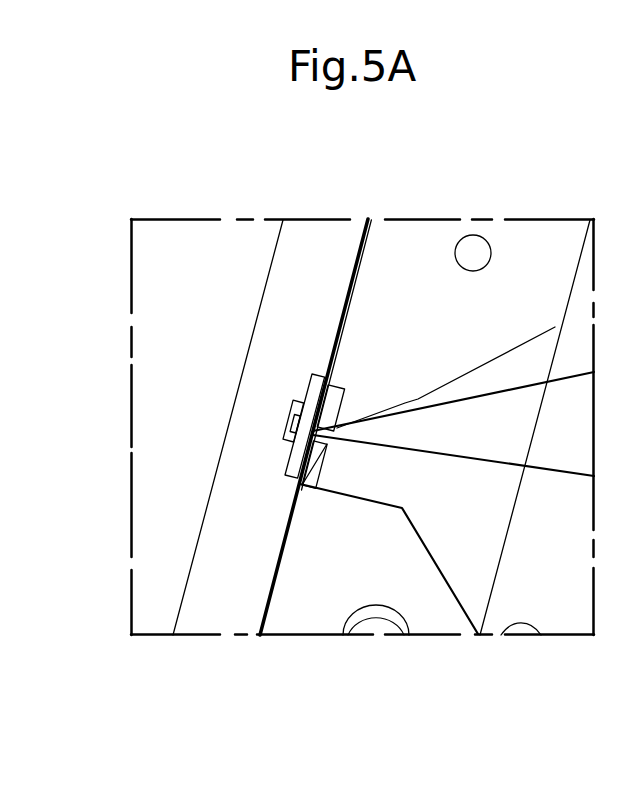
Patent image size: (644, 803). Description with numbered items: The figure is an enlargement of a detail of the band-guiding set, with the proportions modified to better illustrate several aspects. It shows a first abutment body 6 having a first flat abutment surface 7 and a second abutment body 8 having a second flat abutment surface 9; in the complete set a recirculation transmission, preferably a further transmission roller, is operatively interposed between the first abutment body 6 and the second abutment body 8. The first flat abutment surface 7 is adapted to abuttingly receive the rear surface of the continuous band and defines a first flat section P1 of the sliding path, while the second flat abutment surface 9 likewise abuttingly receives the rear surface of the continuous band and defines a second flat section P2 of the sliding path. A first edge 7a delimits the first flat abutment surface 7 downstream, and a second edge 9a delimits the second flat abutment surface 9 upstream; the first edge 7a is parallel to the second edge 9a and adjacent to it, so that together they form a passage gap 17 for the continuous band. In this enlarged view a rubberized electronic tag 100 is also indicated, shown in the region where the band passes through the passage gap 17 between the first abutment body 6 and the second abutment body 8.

The first abutment body 6 is at (410, 373).
The first flat abutment surface 7 is at (361, 267).
The first edge 7a is at (322, 421).
The second abutment body 8 is at (317, 512).
The second flat abutment surface 9 is at (272, 598).
The second edge 9a is at (316, 440).
The passage gap 17 is at (309, 429).
The rubberized electronic tag 100 is at (306, 385).
The first flat section P1 is at (349, 299).
The second flat section P2 is at (285, 527).